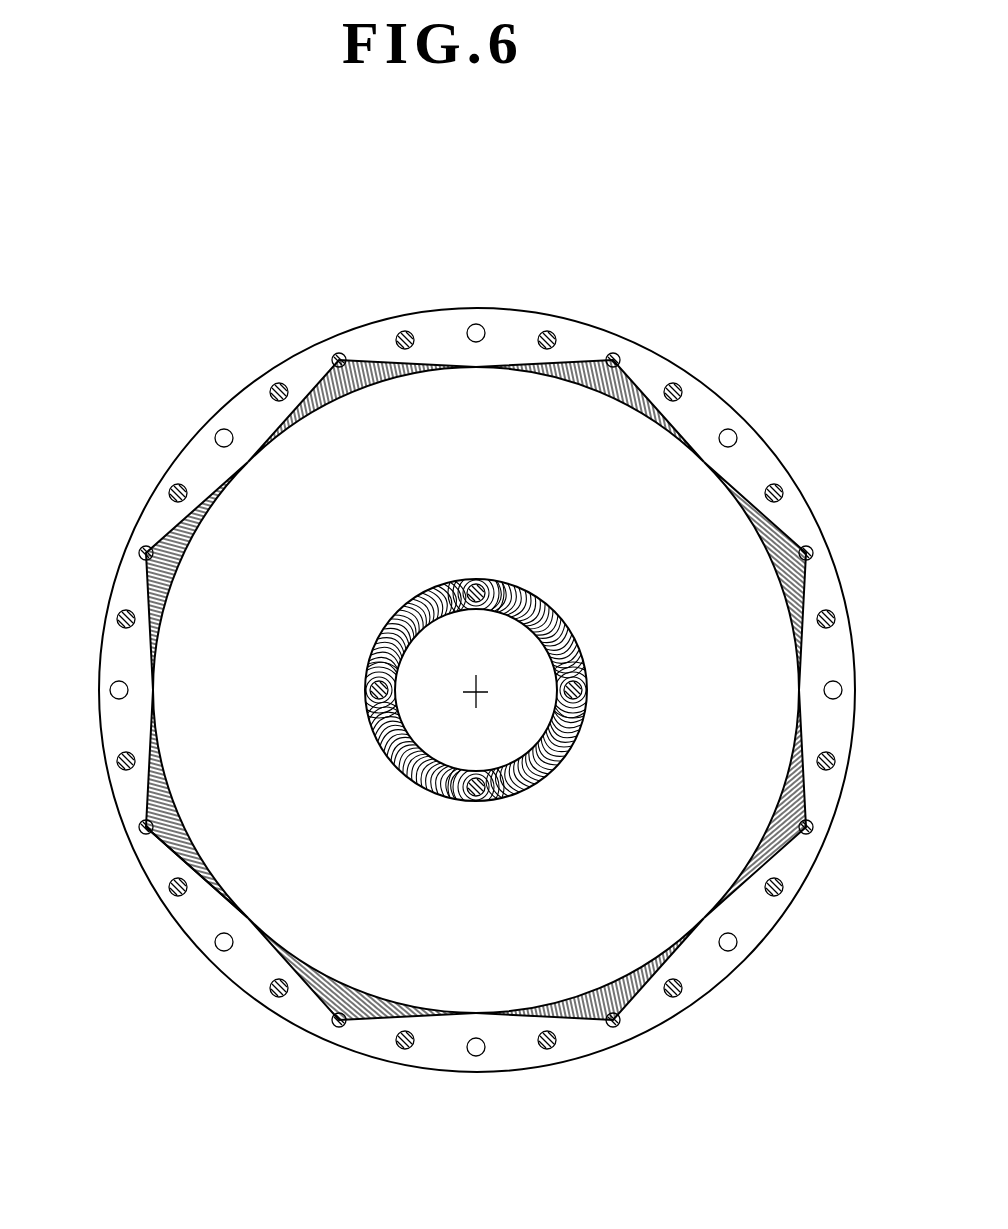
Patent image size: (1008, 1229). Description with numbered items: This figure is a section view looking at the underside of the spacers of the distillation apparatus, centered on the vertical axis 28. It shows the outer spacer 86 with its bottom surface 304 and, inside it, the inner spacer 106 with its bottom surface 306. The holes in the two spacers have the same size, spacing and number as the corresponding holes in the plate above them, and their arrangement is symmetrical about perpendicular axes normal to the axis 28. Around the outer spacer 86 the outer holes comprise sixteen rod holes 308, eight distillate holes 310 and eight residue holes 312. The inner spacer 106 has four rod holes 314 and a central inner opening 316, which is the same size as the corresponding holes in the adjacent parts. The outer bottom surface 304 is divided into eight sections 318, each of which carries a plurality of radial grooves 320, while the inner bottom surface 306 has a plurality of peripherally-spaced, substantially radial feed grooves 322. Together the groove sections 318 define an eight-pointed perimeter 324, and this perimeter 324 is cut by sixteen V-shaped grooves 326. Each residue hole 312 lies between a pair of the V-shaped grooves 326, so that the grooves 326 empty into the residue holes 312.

The vertical axis 28 is at (476, 693).
The outer spacer 86 is at (280, 1019).
The inner spacer 106 is at (407, 782).
The bottom surface 304 is at (257, 973).
The bottom surface 306 is at (390, 732).
The rod holes 308 is at (403, 1048).
The distillate holes 310 is at (475, 1054).
The residue holes 312 is at (340, 1026).
The rod holes 314 is at (468, 798).
The inner opening 316 is at (538, 740).
The sections 318 is at (170, 851).
The radial grooves 320 is at (177, 860).
The feed grooves 322 is at (468, 719).
The eight-pointed perimeter 324 is at (640, 995).
The V-shaped grooves 326 is at (623, 1005).